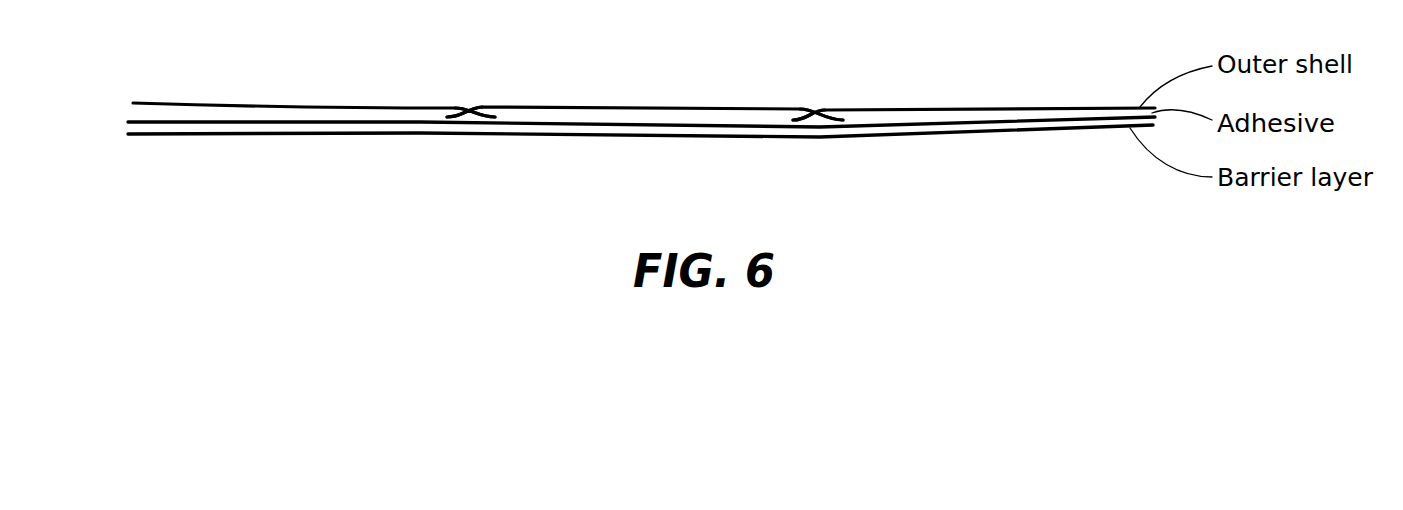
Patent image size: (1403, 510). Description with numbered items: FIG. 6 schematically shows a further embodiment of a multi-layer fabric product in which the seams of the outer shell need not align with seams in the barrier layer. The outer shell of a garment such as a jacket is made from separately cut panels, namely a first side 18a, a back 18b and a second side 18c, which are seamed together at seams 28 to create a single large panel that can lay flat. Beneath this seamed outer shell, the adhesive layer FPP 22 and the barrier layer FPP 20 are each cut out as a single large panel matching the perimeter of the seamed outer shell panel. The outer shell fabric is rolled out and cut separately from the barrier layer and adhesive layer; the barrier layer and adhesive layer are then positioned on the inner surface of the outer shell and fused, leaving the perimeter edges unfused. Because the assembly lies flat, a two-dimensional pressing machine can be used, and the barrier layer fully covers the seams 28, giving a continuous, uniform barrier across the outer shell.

The side of the outer shell 18a is at (317, 107).
The back of the outer shell 18b is at (627, 107).
The side of the outer shell 18c is at (927, 108).
The seam 28 is at (462, 105).
The adhesive layer FPP 22 is at (283, 122).
The barrier layer FPP 20 is at (398, 135).